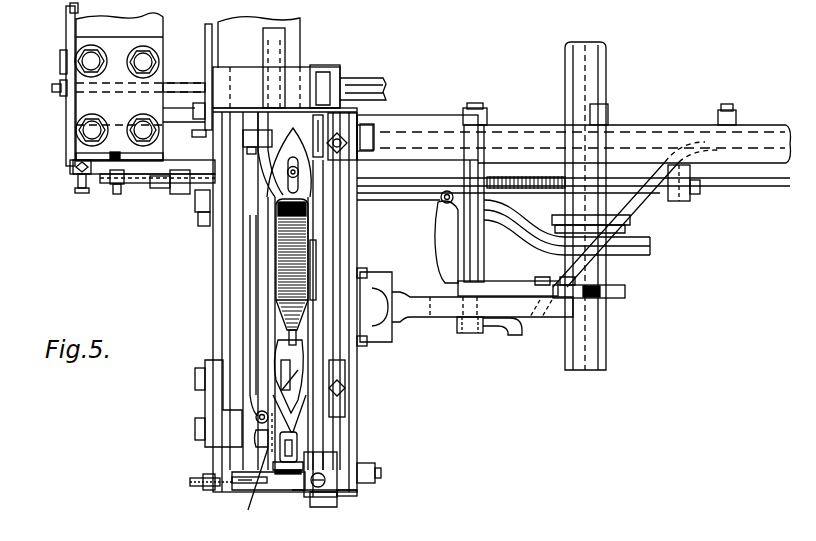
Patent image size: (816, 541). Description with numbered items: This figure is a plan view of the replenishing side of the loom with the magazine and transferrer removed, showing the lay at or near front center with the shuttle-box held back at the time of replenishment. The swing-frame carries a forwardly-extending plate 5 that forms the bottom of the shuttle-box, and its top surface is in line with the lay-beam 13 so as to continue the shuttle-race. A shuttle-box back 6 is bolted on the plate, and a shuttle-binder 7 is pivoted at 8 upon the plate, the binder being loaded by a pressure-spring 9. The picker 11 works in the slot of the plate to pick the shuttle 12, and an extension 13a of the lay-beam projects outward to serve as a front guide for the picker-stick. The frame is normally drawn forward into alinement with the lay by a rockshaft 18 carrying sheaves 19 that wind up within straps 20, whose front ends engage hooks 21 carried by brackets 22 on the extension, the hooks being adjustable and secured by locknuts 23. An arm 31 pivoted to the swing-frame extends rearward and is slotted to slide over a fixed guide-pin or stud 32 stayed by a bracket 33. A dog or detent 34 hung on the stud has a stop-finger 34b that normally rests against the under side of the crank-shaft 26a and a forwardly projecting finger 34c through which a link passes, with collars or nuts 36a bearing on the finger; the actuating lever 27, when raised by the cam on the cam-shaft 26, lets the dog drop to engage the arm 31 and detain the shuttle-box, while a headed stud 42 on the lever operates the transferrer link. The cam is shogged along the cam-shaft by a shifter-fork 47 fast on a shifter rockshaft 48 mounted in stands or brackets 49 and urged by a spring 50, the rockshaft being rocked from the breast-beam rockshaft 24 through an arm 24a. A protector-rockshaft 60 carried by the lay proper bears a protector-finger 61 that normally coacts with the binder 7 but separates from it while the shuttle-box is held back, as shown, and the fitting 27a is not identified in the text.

The forwardly-extending plate 5 is at (252, 488).
The shuttle-box back 6 is at (322, 254).
The shuttle-binder 7 is at (266, 262).
The pivot 8 is at (256, 420).
The pressure-spring 9 is at (252, 348).
The picker 11 is at (300, 440).
The shuttle 12 is at (302, 375).
The lay-beam 13 is at (300, 28).
The extension of the lay-beam 13a is at (214, 297).
The rockshaft 18 is at (334, 507).
The sheaves 19 is at (308, 497).
The straps 20 is at (272, 490).
The hooks 21 is at (194, 133).
The brackets 22 is at (227, 152).
The locknuts 23 is at (206, 488).
The breast-beam rockshaft 24 is at (66, 12).
The arm 24a is at (183, 90).
The cam-shaft 26 is at (586, 362).
The crank-shaft 26a is at (608, 118).
The actuating lever 27 is at (650, 250).
The fitting 27a is at (114, 186).
The slotted arm 31 is at (432, 320).
The guide-pin or stud 32 is at (470, 335).
The bracket 33 is at (512, 336).
The dog or detent 34 is at (500, 290).
The stop-finger 34b is at (625, 290).
The forwardly projecting finger 34c is at (436, 230).
The collars or nuts 36a is at (447, 192).
The headed stud 42 is at (78, 188).
The shifter-fork 47 is at (630, 224).
The shifter rockshaft 48 is at (700, 194).
The stands or brackets 49 is at (690, 178).
The spring 50 is at (506, 177).
The protector-rockshaft 60 is at (207, 40).
The protector-finger 61 is at (193, 108).